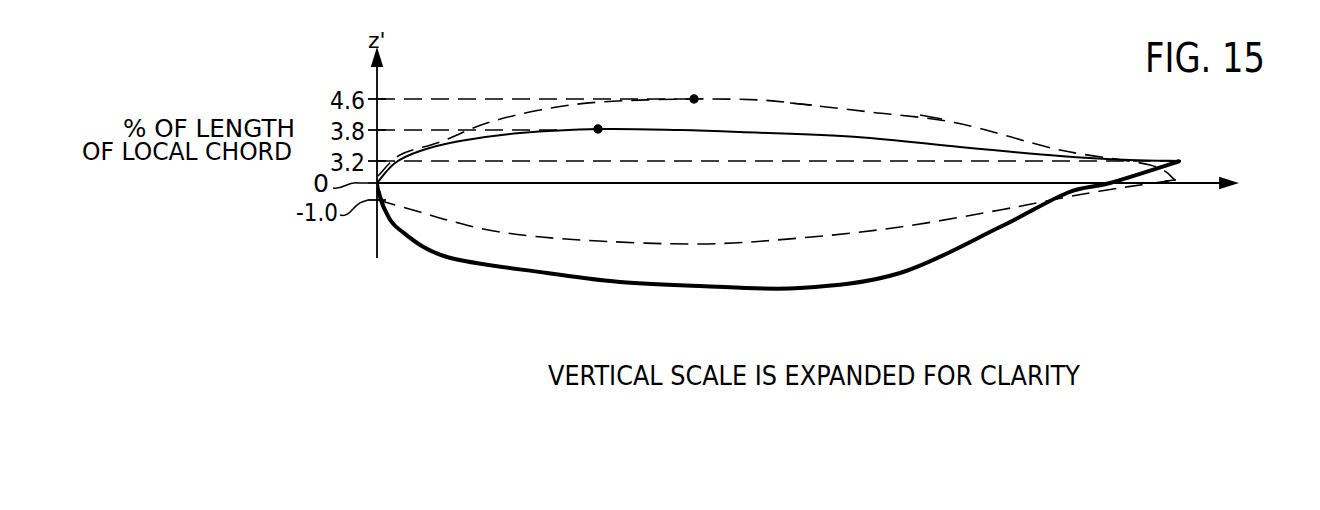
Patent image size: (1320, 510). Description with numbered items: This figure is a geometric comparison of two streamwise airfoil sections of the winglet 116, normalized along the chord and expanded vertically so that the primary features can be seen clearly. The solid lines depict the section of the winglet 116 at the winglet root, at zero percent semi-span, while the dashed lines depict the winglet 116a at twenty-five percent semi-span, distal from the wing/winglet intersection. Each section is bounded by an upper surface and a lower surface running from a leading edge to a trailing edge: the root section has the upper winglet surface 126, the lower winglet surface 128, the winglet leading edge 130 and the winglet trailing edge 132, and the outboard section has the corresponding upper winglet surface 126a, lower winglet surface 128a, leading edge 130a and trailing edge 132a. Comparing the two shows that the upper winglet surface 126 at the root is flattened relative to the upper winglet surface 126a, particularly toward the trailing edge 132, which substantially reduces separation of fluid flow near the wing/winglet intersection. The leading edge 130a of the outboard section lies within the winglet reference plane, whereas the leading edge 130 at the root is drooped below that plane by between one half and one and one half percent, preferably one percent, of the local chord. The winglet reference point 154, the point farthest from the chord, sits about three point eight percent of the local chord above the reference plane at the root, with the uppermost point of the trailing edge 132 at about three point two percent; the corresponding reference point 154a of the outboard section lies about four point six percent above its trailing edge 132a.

The winglet 116 is at (857, 137).
The winglet at 25±3% winglet semi-span 116a is at (800, 100).
The upper winglet surface 126 is at (1000, 147).
The upper winglet surface at 25±3% winglet semi-span 126a is at (930, 116).
The lower winglet surface 128 is at (895, 276).
The lower winglet surface at 25±3% winglet semi-span 128a is at (935, 222).
The winglet leading edge 130 is at (385, 195).
The winglet leading edge at 25±3% winglet semi-span 130a is at (382, 187).
The winglet trailing edge 132 is at (1180, 161).
The winglet trailing edge at 25±3% winglet semi-span 132a is at (1190, 176).
The winglet reference point 154 is at (598, 129).
The winglet reference point at 25±3% winglet semi-span 154a is at (694, 99).